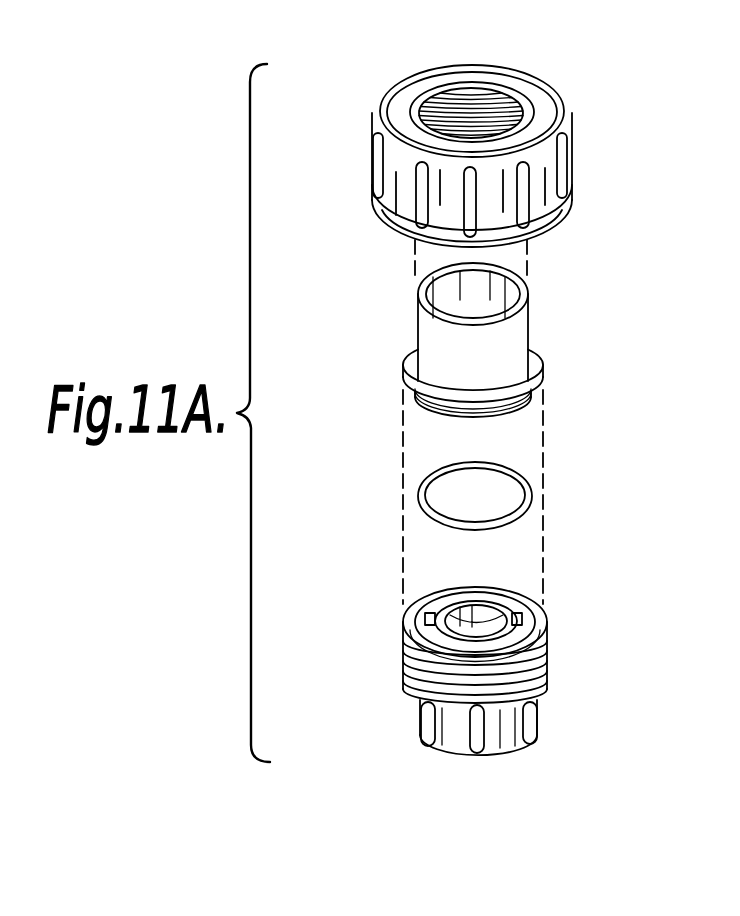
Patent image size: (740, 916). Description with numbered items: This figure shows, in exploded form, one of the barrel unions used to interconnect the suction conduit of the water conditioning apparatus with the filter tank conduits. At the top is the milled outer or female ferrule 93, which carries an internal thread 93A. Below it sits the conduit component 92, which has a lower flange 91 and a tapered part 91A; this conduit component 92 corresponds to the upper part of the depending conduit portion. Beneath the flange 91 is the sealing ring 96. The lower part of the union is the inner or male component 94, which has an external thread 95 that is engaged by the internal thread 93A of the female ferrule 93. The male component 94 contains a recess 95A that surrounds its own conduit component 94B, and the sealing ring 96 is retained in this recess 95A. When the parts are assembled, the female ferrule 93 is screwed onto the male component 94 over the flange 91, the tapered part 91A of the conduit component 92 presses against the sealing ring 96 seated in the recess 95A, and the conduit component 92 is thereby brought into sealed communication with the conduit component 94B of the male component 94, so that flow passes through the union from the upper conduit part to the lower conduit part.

The female ferrule 93 is at (540, 180).
The internal thread 93A is at (466, 108).
The conduit component 92 is at (508, 340).
The lower flange 91 is at (513, 408).
The tapered part 91A is at (430, 407).
The sealing ring 96 is at (533, 490).
The external thread 95 is at (533, 657).
The recess 95A is at (430, 617).
The conduit component 94B is at (517, 620).
The male component 94 is at (510, 722).